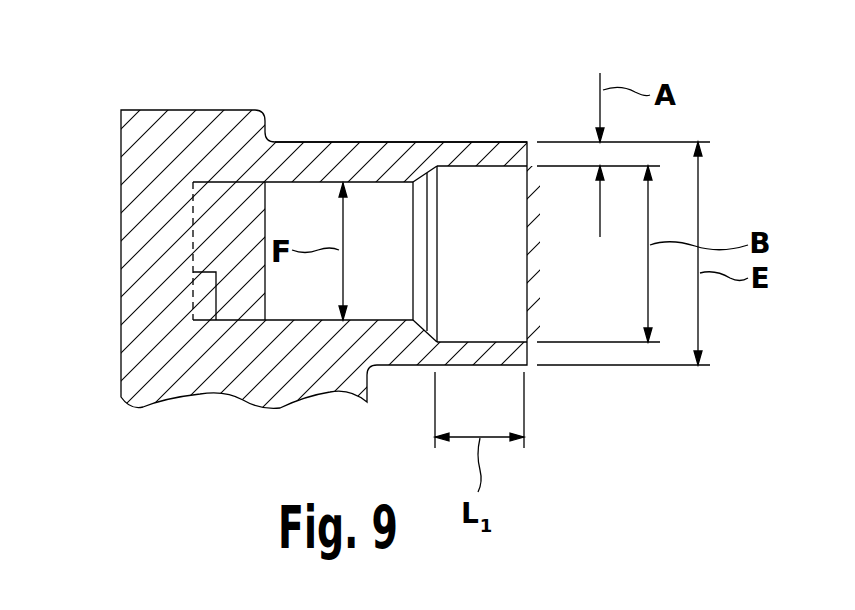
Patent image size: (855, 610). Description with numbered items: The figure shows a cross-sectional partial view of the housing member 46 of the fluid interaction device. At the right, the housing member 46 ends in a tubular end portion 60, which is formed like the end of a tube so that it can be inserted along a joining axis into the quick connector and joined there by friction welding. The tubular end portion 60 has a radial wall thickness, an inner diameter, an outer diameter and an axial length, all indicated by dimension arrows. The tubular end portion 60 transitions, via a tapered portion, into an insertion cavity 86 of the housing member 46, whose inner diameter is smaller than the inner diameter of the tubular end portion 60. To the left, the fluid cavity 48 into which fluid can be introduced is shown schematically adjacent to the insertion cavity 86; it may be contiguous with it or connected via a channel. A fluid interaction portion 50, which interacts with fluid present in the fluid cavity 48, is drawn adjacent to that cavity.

The housing member 46 is at (150, 222).
The fluid cavity 48 is at (204, 180).
The fluid interaction portion 50 is at (194, 291).
The insertion cavity 86 is at (385, 200).
The tubular end portion 60 is at (470, 162).